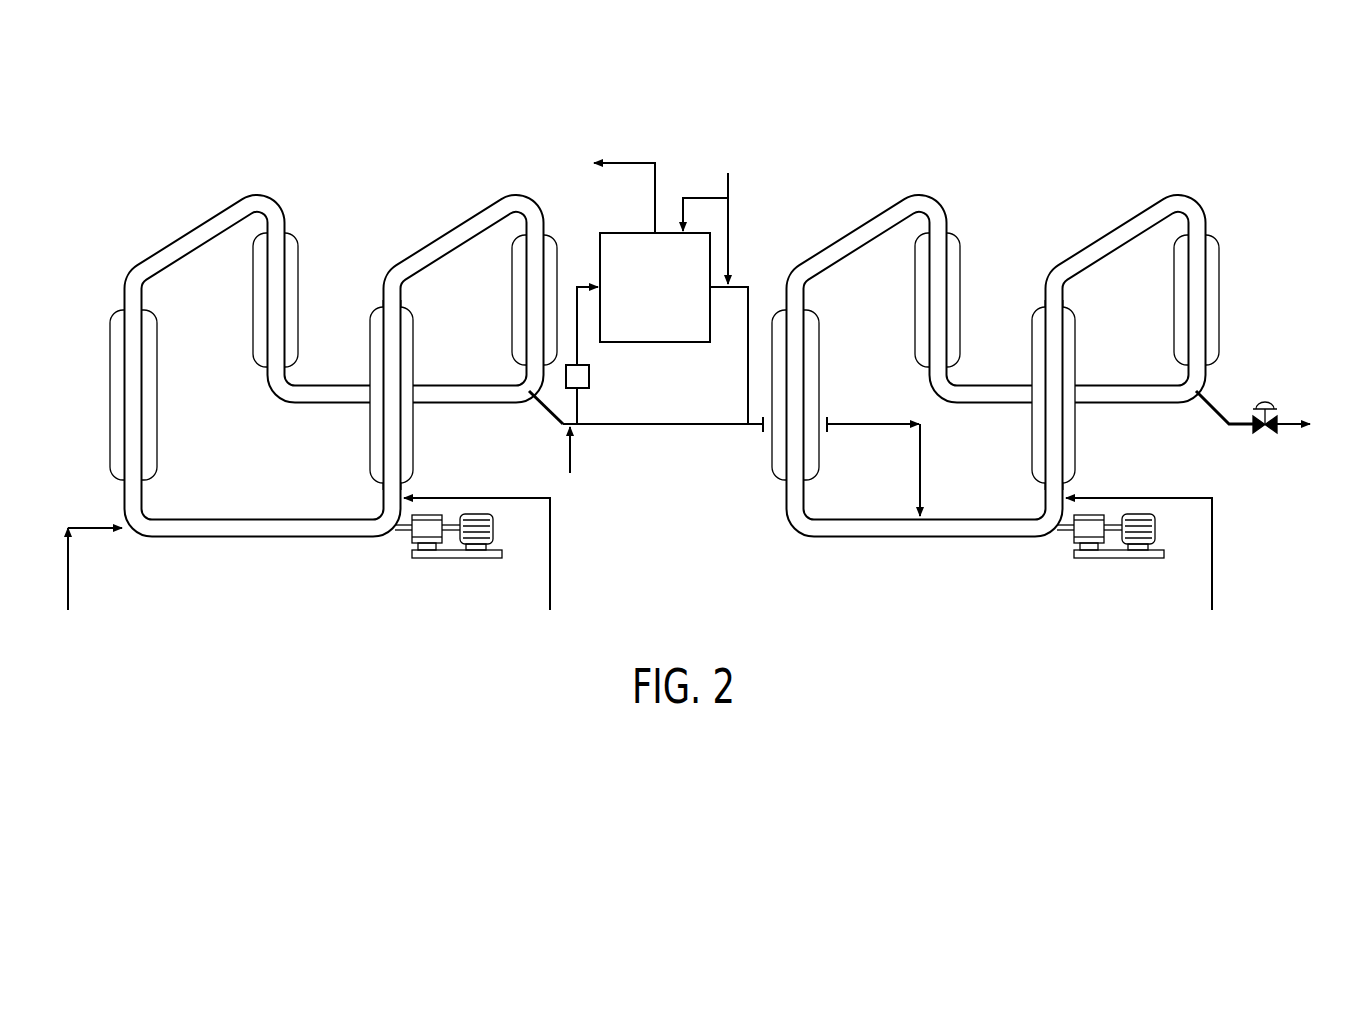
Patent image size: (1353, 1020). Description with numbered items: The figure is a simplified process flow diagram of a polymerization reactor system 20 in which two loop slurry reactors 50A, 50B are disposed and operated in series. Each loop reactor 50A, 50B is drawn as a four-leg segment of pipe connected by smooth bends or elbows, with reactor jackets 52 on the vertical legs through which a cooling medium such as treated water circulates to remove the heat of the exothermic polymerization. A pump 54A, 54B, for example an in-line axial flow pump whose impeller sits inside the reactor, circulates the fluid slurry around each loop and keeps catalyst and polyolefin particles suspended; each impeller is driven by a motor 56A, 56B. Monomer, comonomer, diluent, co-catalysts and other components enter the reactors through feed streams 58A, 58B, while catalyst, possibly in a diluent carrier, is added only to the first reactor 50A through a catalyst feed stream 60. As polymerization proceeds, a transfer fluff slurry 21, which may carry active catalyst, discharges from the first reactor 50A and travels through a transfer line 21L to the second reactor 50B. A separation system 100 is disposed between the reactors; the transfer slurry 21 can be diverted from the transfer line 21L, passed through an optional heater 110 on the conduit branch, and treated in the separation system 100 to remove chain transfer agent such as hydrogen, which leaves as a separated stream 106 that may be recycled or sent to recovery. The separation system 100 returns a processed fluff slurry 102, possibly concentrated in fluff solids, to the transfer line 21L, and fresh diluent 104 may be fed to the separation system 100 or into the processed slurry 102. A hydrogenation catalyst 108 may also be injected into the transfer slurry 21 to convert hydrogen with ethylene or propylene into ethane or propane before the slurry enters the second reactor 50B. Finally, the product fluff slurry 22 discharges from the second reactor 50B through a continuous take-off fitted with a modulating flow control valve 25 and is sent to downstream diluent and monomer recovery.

The polymerization reactor system 20 is at (977, 80).
The transfer fluff slurry 21 is at (552, 413).
The transfer line 21L is at (658, 428).
The product fluff slurry 22 is at (1212, 415).
The modulating flow control valve 25 is at (1263, 400).
The first loop slurry reactor 50A is at (447, 228).
The second loop slurry reactor 50B is at (1109, 228).
The reactor jacket 52 is at (110, 398).
The first pump 54A is at (413, 545).
The second pump 54B is at (1075, 545).
The first motor 56A is at (492, 533).
The second motor 56B is at (1154, 533).
The first feed stream 58A is at (552, 557).
The second feed stream 58B is at (1214, 557).
The catalyst feed stream 60 is at (68, 572).
The separation system 100 is at (672, 297).
The processed fluff slurry 102 is at (750, 345).
The fresh diluent 104 is at (728, 222).
The separated stream 106 is at (657, 195).
The hydrogenation catalyst 108 is at (573, 457).
The heater 110 is at (591, 376).